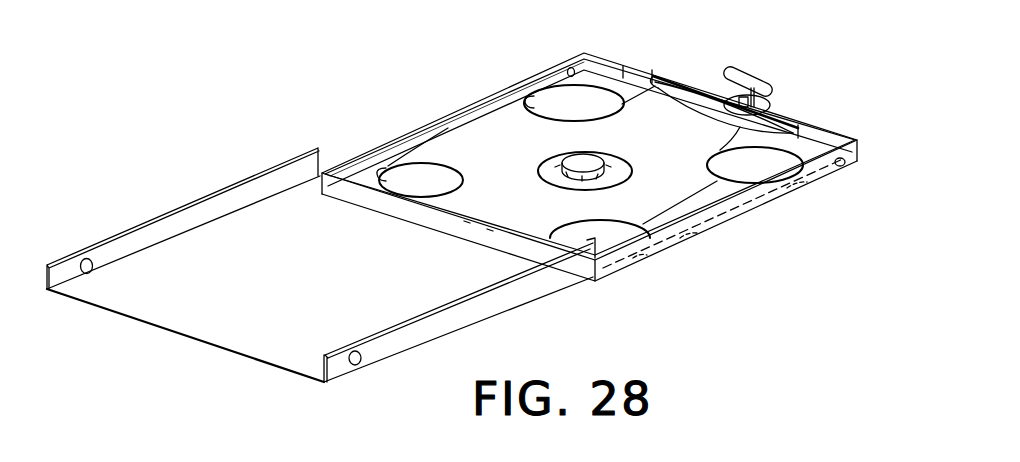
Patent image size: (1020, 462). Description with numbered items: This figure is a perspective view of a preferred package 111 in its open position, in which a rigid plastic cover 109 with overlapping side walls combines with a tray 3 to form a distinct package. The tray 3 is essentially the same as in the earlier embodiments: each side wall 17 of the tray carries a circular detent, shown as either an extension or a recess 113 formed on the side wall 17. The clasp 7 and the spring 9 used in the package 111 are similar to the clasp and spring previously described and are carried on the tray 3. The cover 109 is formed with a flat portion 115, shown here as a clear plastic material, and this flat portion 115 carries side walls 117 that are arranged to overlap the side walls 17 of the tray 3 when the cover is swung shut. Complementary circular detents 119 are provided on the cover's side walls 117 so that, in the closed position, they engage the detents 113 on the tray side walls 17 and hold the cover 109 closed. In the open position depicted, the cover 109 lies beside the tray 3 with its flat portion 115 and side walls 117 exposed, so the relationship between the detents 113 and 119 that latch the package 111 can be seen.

The tray 3 is at (762, 214).
The clasp 7 is at (746, 70).
The spring 9 is at (697, 92).
The side wall 17 is at (451, 116).
The cover 109 is at (320, 270).
The package 111 is at (729, 250).
The detent 113 is at (567, 68).
The flat portion 115 is at (237, 357).
The side walls 117 is at (216, 195).
The complementary circular detents 119 is at (361, 364).